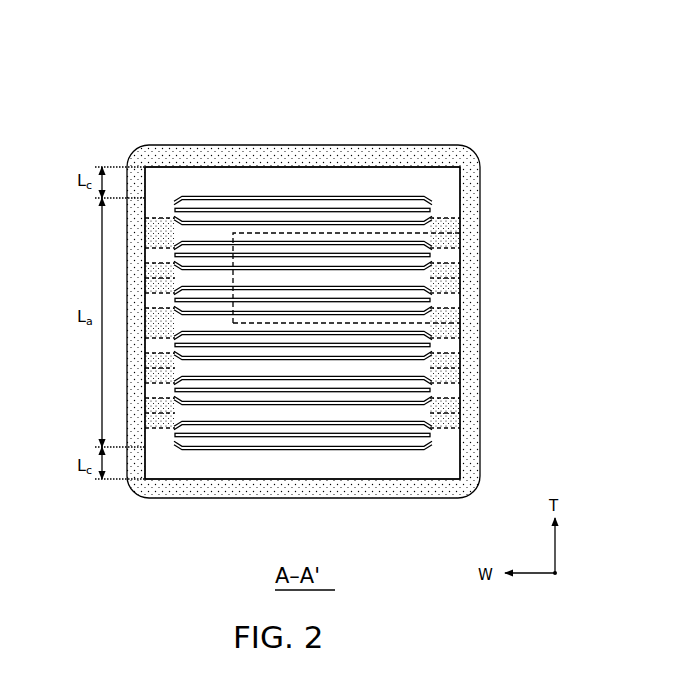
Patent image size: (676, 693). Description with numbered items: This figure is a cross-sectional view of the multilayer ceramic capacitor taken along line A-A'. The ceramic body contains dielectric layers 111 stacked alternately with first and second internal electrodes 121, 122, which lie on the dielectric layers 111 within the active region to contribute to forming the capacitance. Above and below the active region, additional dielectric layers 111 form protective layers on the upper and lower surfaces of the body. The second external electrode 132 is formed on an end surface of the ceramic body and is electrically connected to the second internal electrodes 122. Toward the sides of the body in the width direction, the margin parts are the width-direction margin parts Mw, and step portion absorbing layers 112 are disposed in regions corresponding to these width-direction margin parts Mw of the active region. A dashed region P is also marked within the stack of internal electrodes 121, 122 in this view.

The dielectric layers 111 is at (367, 182).
The step portion absorbing layers 112 is at (470, 276).
The first internal electrodes 121 is at (277, 436).
The second internal electrodes 122 is at (318, 450).
The second external electrode 132 is at (413, 153).
The unit region P is at (282, 233).
The width-direction margin parts Mw is at (445, 437).